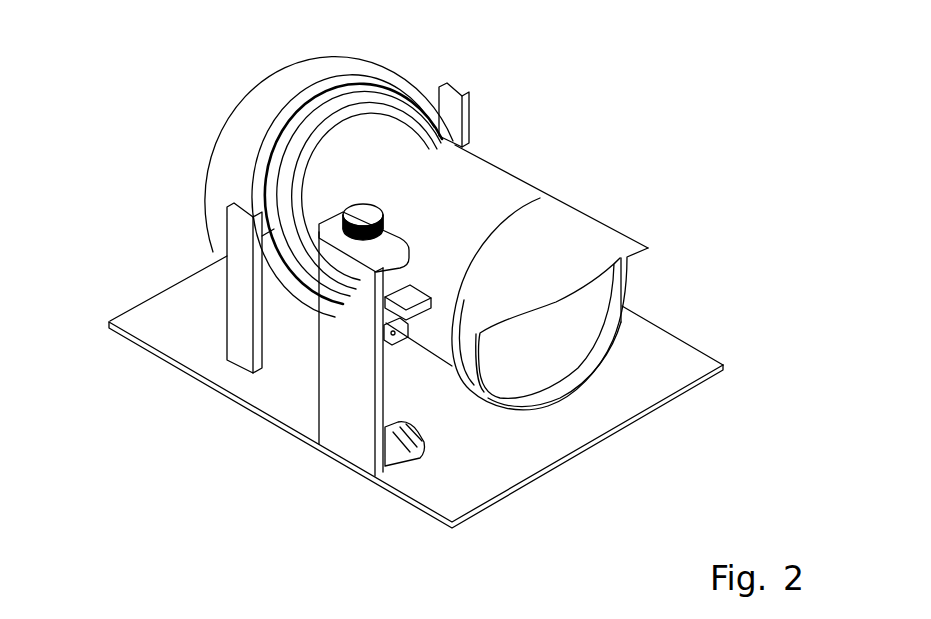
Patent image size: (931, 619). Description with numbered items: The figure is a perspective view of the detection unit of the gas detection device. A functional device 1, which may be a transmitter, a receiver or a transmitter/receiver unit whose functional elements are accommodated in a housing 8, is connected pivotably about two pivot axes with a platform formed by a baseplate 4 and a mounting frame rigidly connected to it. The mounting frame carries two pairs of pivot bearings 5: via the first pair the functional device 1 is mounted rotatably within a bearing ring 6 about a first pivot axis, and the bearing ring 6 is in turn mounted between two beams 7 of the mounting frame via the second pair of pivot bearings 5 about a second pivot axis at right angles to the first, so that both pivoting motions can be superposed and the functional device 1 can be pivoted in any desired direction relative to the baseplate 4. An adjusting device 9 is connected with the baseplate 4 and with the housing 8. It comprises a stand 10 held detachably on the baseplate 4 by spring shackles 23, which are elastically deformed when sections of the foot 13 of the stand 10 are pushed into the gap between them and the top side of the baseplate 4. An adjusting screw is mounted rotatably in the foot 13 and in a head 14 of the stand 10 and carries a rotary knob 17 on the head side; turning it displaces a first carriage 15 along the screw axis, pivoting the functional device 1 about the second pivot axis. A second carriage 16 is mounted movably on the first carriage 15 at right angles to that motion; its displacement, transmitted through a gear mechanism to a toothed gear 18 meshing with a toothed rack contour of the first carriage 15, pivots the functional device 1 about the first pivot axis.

The functional device 1 is at (439, 151).
The baseplate 4 is at (157, 332).
The pivot bearings 5 is at (278, 215).
The bearing ring 6 is at (385, 72).
The beams 7 is at (243, 247).
The housing 8 is at (250, 150).
The adjusting device 9 is at (328, 344).
The stand 10 is at (355, 380).
The foot 13 is at (414, 468).
The head 14 is at (347, 259).
The first carriage 15 is at (398, 324).
The second carriage 16 is at (412, 290).
The rotary knob 17 is at (366, 212).
The toothed gear 18 is at (390, 332).
The spring shackles 23 is at (387, 460).